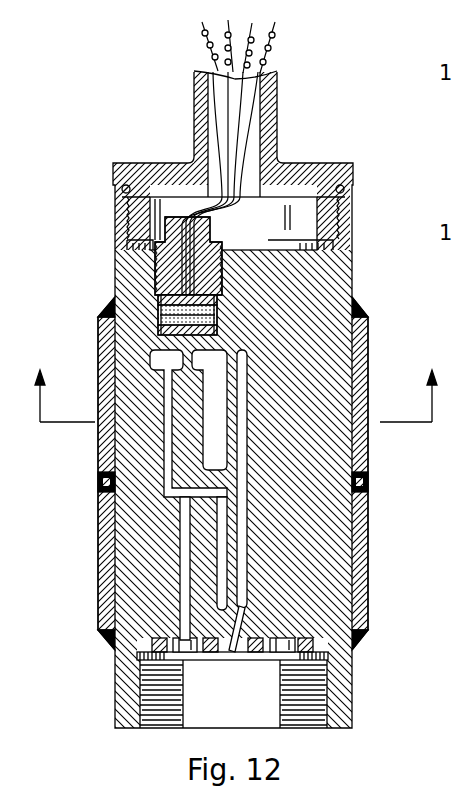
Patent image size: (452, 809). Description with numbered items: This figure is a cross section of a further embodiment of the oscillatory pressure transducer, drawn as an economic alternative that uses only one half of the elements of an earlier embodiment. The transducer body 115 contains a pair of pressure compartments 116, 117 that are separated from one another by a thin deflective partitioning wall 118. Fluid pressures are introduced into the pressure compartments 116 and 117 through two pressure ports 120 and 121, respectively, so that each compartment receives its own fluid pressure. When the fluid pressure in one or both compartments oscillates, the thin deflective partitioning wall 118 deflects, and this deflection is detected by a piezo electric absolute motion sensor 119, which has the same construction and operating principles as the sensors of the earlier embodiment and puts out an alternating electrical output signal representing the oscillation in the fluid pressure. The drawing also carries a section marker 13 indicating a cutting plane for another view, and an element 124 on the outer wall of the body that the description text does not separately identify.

The transducer body 115 is at (305, 290).
The pressure compartment 116 is at (217, 443).
The pressure compartment 117 is at (242, 438).
The thin deflective partitioning wall 118 is at (235, 528).
The piezo electric absolute motion sensor 119 is at (128, 287).
The pressure port 120 is at (247, 623).
The pressure port 121 is at (180, 567).
The side wall 124 is at (100, 548).
The section line 13- 13 is at (237, 383).